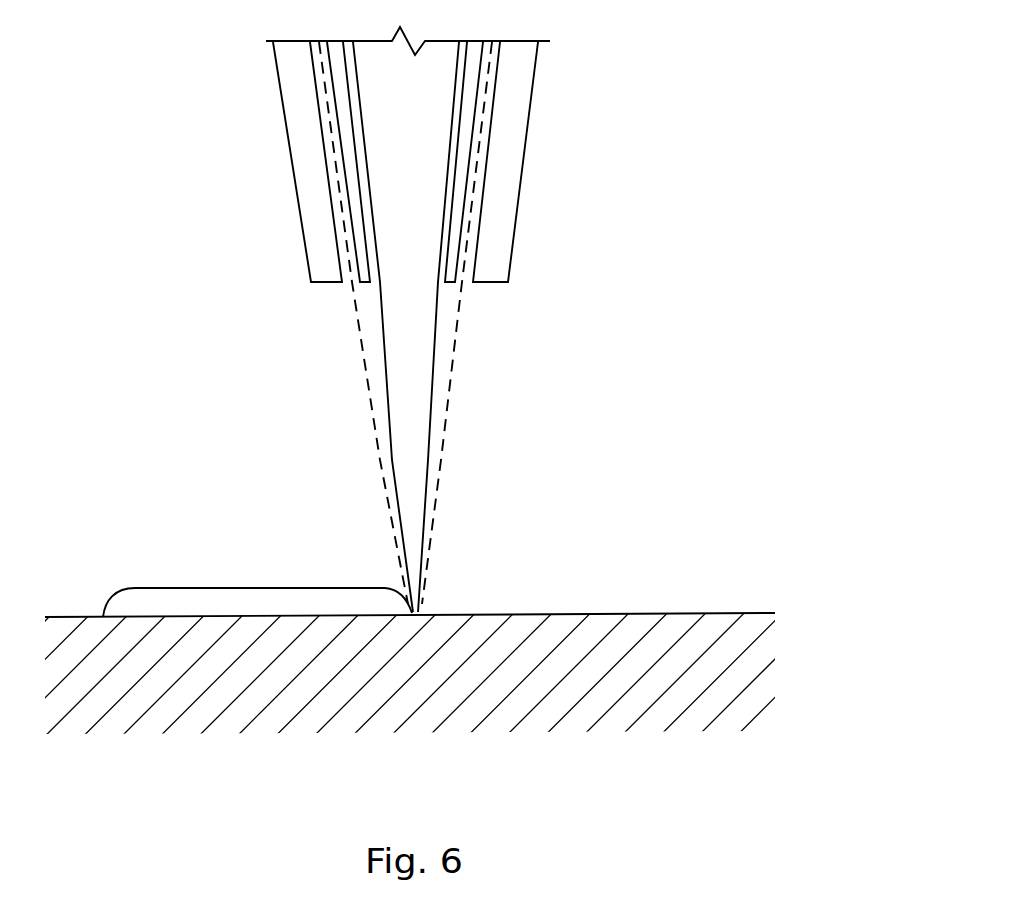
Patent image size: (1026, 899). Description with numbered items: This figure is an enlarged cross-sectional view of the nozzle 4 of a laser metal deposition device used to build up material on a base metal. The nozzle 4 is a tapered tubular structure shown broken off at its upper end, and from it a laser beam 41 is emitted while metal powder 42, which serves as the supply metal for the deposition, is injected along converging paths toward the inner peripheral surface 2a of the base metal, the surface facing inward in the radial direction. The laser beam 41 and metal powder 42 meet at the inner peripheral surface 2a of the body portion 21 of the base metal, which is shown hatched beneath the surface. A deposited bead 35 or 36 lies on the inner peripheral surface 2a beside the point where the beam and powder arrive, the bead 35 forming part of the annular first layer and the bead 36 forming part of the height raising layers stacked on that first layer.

The nozzle 4 is at (507, 137).
The laser beam 41 is at (411, 379).
The metal powder 42 is at (377, 440).
The bead 35 is at (257, 556).
The bead 36 is at (172, 587).
The inner peripheral surface 2a is at (645, 612).
The body portion 21 is at (427, 700).